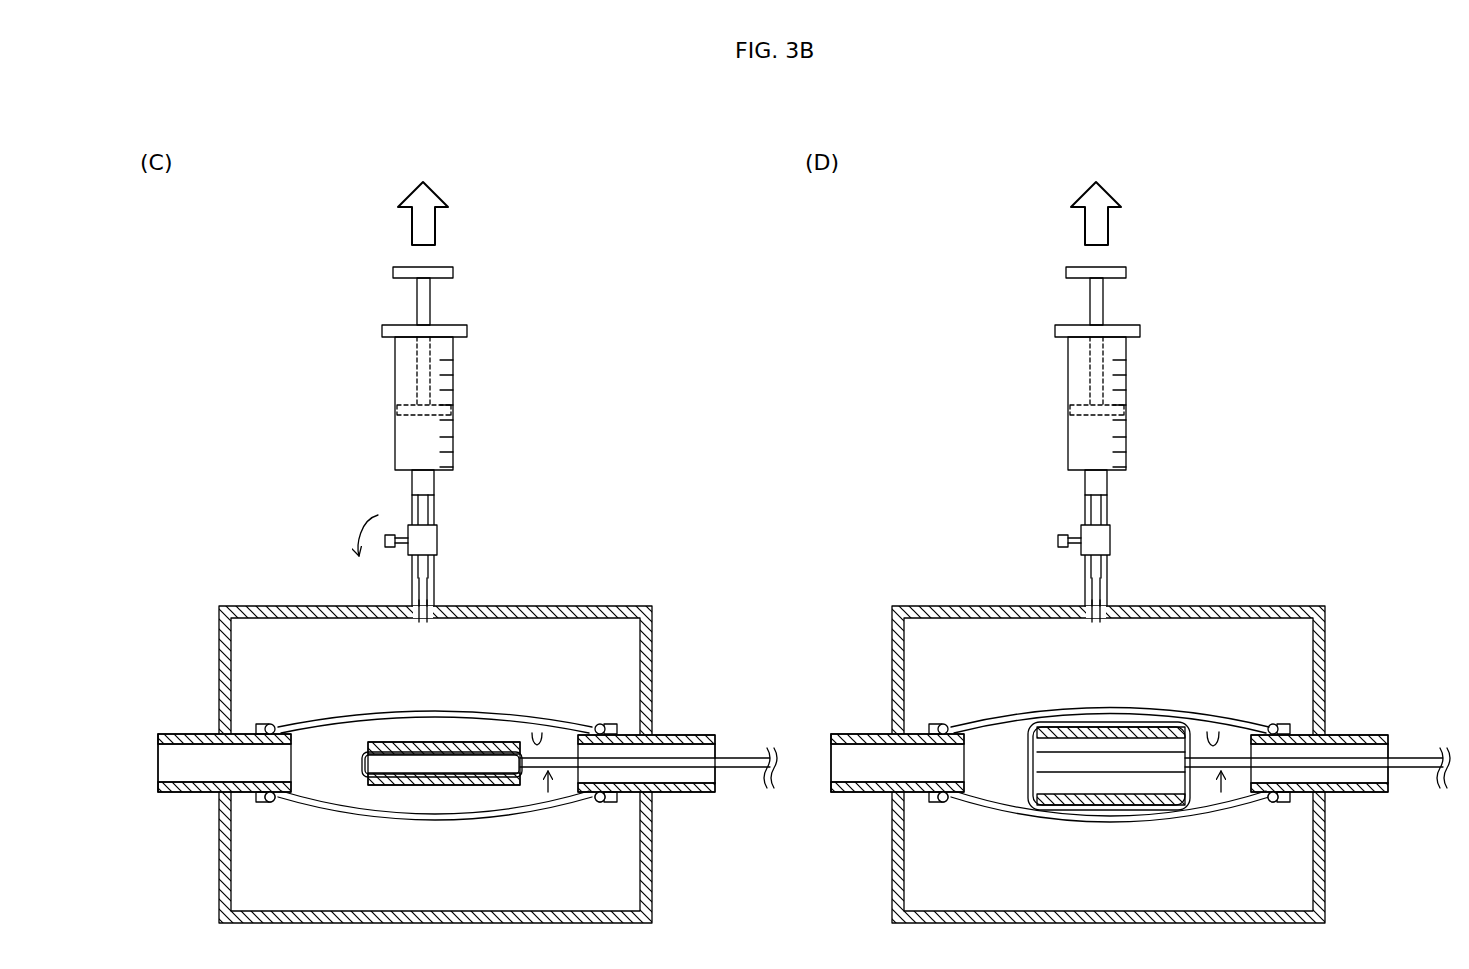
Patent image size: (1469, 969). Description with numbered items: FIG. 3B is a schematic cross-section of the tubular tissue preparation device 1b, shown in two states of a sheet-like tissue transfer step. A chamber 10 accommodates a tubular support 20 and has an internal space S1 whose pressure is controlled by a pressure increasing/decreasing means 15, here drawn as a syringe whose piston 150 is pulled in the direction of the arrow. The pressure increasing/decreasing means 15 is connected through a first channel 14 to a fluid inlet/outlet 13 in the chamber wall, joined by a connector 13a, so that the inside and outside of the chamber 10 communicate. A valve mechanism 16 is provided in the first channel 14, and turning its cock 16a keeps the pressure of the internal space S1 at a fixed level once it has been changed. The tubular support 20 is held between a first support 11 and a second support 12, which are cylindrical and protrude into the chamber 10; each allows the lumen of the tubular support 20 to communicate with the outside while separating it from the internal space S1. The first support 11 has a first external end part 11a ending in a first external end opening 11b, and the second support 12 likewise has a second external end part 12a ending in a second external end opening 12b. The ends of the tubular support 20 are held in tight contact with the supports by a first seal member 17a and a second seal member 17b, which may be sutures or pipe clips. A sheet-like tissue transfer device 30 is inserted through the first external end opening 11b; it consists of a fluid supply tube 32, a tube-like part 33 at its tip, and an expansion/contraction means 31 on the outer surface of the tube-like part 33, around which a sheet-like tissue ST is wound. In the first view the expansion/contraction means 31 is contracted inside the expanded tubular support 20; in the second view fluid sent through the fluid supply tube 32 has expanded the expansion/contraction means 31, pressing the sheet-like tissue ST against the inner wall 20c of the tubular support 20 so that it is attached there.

The tubular tissue preparation device 1b is at (676, 250).
The chamber 10 is at (250, 606).
The first support 11 is at (625, 735).
The first external end part 11a is at (690, 735).
The first external end opening 11b is at (724, 775).
The second support 12 is at (250, 734).
The second external end part 12a is at (178, 734).
The second external end opening 12b is at (150, 764).
The fluid inlet/outlet 13 is at (416, 628).
The connector 13a is at (413, 600).
The first channel 14 is at (434, 578).
The pressure increasing/decreasing means 15 is at (453, 355).
The valve mechanism 16 is at (437, 541).
The cock 16a is at (390, 536).
The first seal member 17a is at (600, 803).
The second seal member 17b is at (270, 803).
The tubular support 20 is at (405, 712).
The inner wall 20c is at (537, 733).
The sheet-like tissue transfer device 30 is at (548, 796).
The expansion/contraction means 31 is at (362, 765).
The fluid supply tube 32 is at (748, 758).
The tube-like part 33 is at (473, 774).
The piston 150 is at (441, 267).
The internal space S1 is at (567, 636).
The sheet-like tissue ST is at (456, 742).